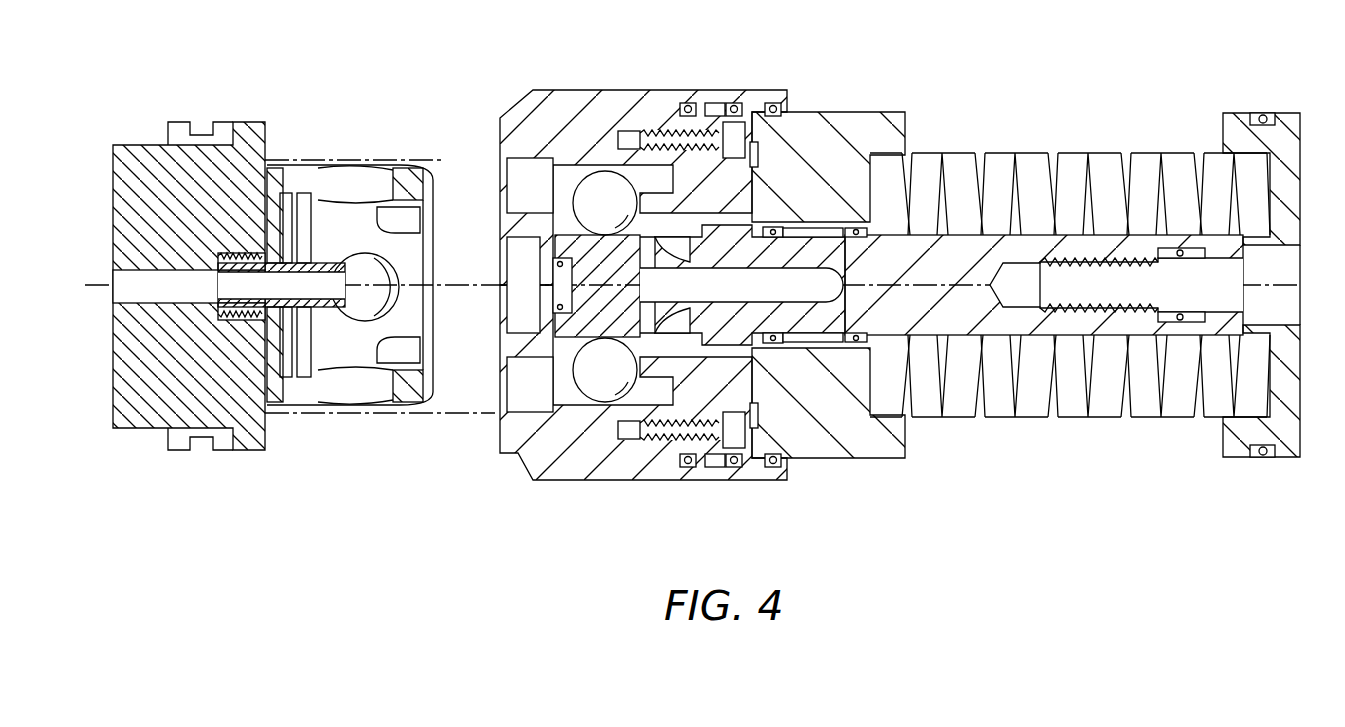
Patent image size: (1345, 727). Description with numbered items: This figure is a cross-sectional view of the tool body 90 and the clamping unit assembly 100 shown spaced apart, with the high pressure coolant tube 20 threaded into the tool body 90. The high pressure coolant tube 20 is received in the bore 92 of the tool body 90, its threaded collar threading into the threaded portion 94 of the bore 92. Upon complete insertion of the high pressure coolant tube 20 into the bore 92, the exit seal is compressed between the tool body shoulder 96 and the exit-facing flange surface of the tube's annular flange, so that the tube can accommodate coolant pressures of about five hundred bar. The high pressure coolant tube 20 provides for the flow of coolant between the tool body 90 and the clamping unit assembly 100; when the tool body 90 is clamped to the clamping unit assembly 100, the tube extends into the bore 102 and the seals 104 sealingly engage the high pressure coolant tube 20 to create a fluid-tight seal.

The bore 92 is at (153, 280).
The threaded portion 94 is at (233, 257).
The tool body 90 is at (368, 115).
The tool body shoulder 96 is at (220, 313).
The high pressure coolant tube 20 is at (316, 307).
The seals 104 is at (563, 262).
The bore 102 is at (610, 273).
The clamping unit assembly 100 is at (1023, 114).